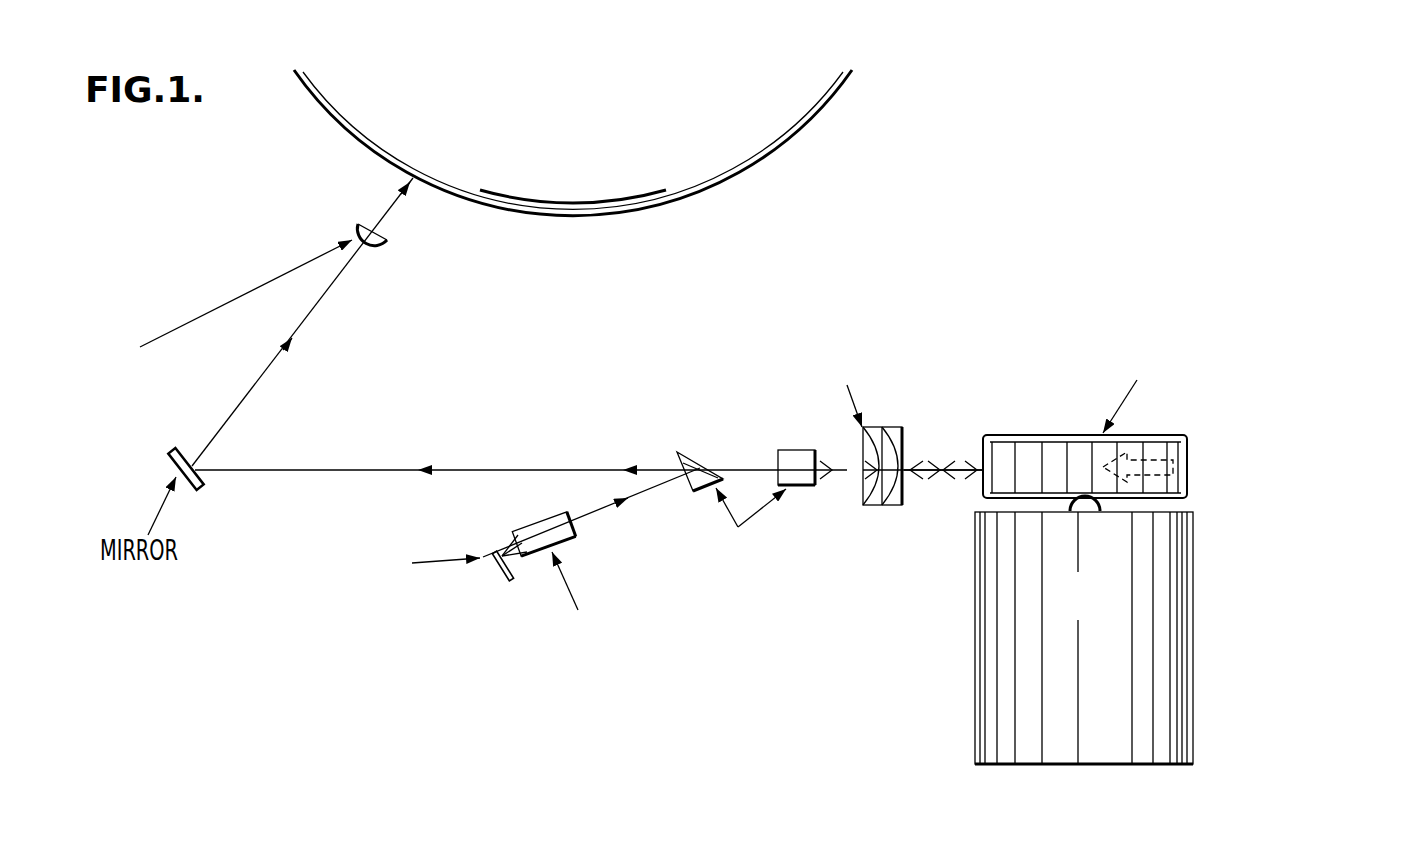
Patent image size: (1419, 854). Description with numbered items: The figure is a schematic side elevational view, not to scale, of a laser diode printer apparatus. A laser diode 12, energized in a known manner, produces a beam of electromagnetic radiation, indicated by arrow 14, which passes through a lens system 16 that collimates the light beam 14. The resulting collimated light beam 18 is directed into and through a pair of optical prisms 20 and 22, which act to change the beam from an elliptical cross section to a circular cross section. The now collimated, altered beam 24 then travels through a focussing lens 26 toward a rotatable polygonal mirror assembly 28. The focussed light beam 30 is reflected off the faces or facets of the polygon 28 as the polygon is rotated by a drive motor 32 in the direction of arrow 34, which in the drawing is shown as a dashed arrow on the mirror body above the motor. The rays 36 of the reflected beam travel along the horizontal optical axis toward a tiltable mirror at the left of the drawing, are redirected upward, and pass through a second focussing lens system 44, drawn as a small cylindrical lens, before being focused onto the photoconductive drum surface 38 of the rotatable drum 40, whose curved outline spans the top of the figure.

The laser diode 12 is at (492, 570).
The light beam 14 is at (506, 540).
The lens system 16 is at (548, 525).
The collimated light beam 18 is at (660, 487).
The optical prism 20 is at (702, 455).
The optical prism 22 is at (798, 452).
The collimated altered beam 24 is at (840, 472).
The focussing lens 26 is at (888, 507).
The rotatable polygonal mirror assembly 28 is at (1190, 455).
The focussed light beam 30 is at (940, 472).
The drive motor 32 is at (1193, 620).
The arrow 34 is at (1178, 480).
The rays 36 is at (296, 345).
The photoconductive drum surface 38 is at (570, 218).
The rotatable drum 40 is at (582, 190).
The second focussing lens system 44 is at (386, 242).